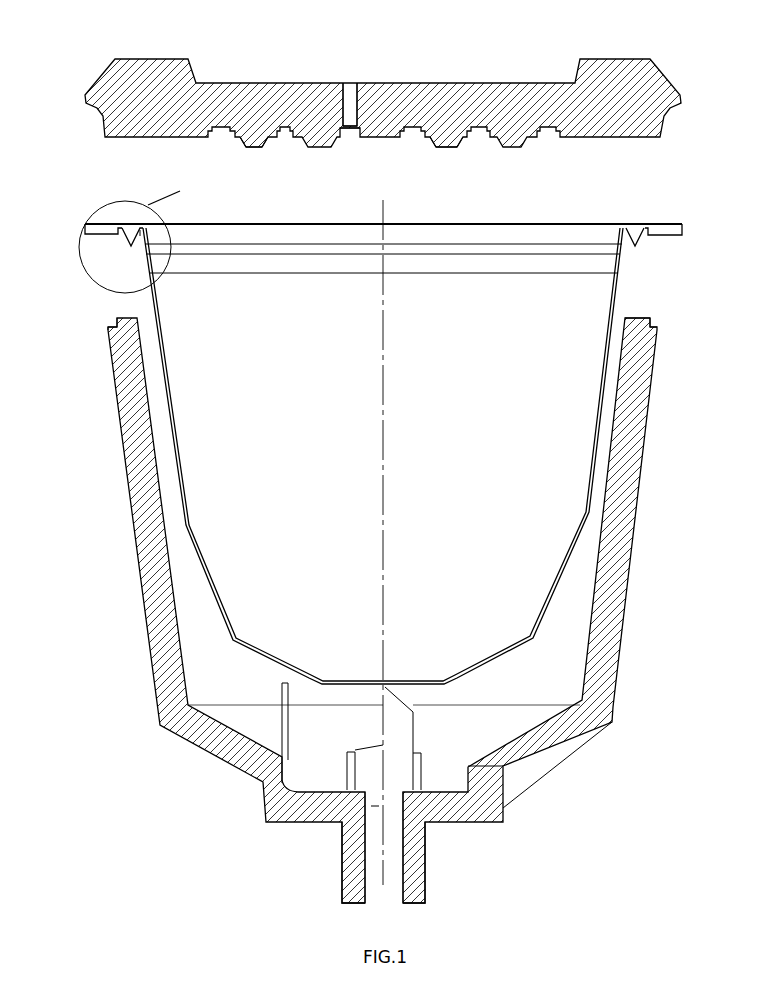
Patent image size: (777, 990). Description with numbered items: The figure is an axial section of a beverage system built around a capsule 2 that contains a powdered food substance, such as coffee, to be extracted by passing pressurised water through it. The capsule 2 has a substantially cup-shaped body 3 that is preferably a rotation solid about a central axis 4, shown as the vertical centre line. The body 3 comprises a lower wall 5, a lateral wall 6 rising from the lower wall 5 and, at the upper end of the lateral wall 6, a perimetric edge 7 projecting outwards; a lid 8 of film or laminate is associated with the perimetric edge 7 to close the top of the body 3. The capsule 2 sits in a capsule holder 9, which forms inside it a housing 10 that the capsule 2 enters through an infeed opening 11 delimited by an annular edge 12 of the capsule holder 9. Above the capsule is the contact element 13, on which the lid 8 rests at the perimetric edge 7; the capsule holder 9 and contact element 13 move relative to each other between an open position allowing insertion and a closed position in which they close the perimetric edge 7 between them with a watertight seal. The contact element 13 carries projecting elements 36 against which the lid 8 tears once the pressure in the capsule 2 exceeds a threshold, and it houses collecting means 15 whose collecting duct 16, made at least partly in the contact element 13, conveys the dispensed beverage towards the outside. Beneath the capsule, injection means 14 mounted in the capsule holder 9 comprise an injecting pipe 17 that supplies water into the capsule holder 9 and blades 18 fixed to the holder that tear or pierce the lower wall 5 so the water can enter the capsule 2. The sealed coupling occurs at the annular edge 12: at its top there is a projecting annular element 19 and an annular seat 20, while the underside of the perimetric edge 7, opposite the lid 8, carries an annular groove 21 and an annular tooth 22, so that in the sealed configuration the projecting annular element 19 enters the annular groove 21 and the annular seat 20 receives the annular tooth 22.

The capsule 2 is at (391, 535).
The body 3 is at (608, 310).
The central axis 4 is at (383, 883).
The lower wall 5 is at (440, 688).
The lateral wall 6 is at (570, 570).
The perimetric edge 7 is at (680, 233).
The lid 8 is at (137, 223).
The capsule holder 9 is at (605, 650).
The housing 10 is at (562, 712).
The infeed opening 11 is at (144, 316).
The annular edge 12 is at (110, 330).
The contact element 13 is at (613, 65).
The injection means 14 is at (374, 806).
The collecting means 15 is at (340, 119).
The collecting duct 16 is at (350, 84).
The injecting pipe 17 is at (397, 870).
The blades 18 is at (283, 740).
The projecting annular element 19 is at (636, 322).
The annular seat 20 is at (117, 317).
The annular groove 21 is at (134, 252).
The annular tooth 22 is at (127, 242).
The projecting elements 36 is at (247, 140).